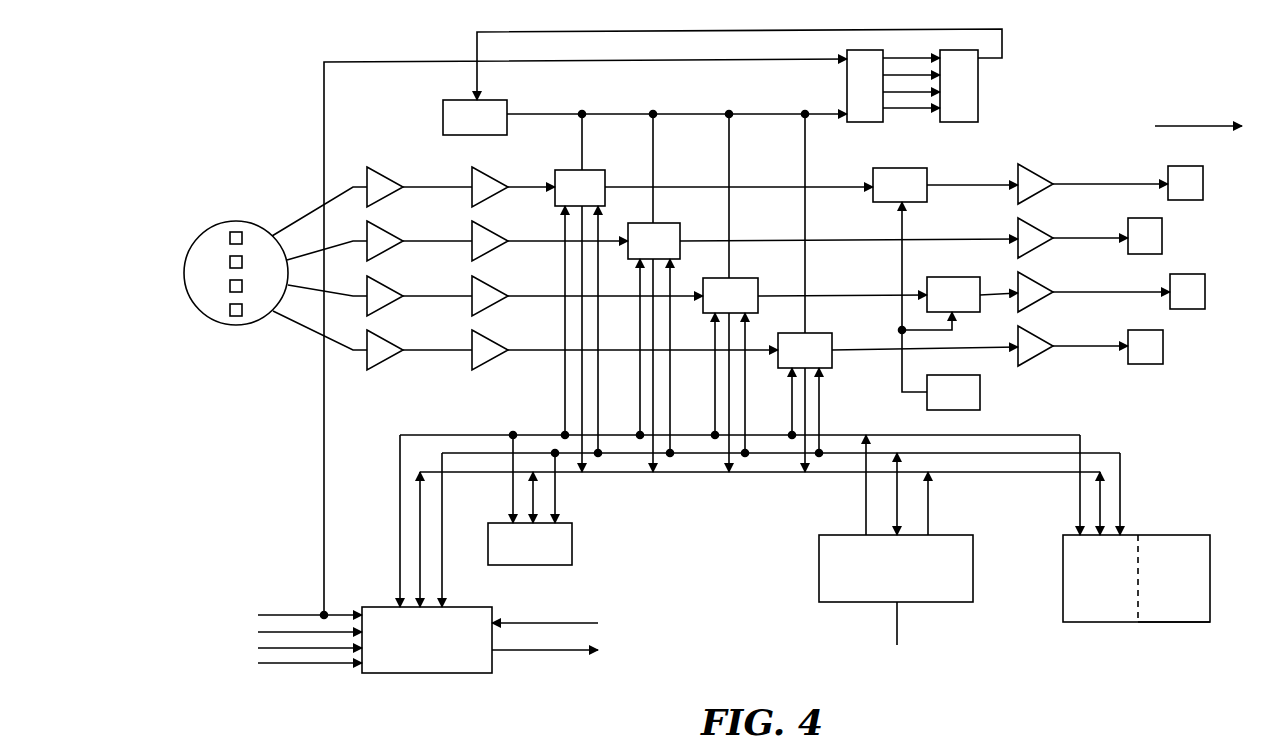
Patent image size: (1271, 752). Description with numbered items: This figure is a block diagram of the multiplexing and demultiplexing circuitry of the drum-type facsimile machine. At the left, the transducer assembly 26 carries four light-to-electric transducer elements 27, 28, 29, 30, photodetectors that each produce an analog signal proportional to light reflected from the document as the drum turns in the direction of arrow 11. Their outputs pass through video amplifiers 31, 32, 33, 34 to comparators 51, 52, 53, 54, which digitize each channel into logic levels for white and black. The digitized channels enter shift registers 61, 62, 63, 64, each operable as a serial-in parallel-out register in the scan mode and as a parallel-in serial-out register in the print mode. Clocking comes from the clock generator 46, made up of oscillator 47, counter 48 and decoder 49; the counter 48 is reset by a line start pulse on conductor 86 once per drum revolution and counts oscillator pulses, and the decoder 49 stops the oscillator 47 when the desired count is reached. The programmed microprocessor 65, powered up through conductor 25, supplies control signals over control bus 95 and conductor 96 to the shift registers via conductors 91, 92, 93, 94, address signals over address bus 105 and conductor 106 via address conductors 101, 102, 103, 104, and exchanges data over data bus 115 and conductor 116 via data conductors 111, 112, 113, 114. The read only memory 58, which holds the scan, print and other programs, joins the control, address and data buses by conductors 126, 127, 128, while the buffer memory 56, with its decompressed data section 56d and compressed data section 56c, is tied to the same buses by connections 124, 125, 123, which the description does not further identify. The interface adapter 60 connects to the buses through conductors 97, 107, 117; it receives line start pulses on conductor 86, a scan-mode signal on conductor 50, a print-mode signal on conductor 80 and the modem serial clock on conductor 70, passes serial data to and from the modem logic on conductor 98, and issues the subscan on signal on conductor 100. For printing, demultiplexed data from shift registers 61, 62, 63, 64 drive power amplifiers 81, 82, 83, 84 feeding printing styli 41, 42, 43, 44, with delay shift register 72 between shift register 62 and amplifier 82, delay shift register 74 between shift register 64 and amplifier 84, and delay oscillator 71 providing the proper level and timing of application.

The arrow 11 is at (1200, 125).
The conductor 25 is at (897, 645).
The transducer assembly 26 is at (257, 226).
The transducer element 27 is at (232, 316).
The transducer element 28 is at (230, 287).
The transducer element 29 is at (230, 258).
The transducer element 30 is at (234, 232).
The video amplifier 31 is at (383, 366).
The video amplifier 32 is at (395, 311).
The video amplifier 33 is at (398, 237).
The video amplifier 34 is at (395, 178).
The printing stylus 41 is at (1163, 358).
The printing stylus 42 is at (1205, 296).
The printing stylus 43 is at (1162, 242).
The printing stylus 44 is at (1203, 184).
The clock generator 46 is at (462, 50).
The oscillator 47 is at (509, 101).
The counter 48 is at (847, 80).
The decoder 49 is at (978, 117).
The conductor 50 is at (262, 633).
The comparator 51 is at (498, 366).
The comparator 52 is at (505, 311).
The comparator 53 is at (502, 234).
The comparator 54 is at (500, 176).
The buffer memory 56 is at (1178, 533).
The compressed data section 56c is at (1178, 622).
The decompressed data section 56d is at (1098, 622).
The read only memory 58 is at (572, 548).
The interface adapter 60 is at (478, 673).
The shift register 61 is at (828, 333).
The shift register 62 is at (750, 278).
The shift register 63 is at (675, 223).
The shift register 64 is at (598, 170).
The programmed microprocessor 65 is at (838, 603).
The conductor 70 is at (270, 665).
The delay oscillator 71 is at (980, 398).
The delay shift register 72 is at (940, 277).
The delay shift register 74 is at (900, 168).
The conductor 80 is at (262, 650).
The power amplifier 81 is at (1040, 342).
The power amplifier 82 is at (1045, 287).
The power amplifier 83 is at (1045, 232).
The power amplifier 84 is at (1045, 178).
The conductor 86 is at (270, 613).
The conductor 91 is at (792, 388).
The conductor 92 is at (715, 368).
The conductor 93 is at (640, 368).
The conductor 94 is at (565, 387).
The control bus 95 is at (418, 435).
The conductor 96 is at (866, 503).
The conductor 97 is at (400, 512).
The conductor 98 is at (572, 623).
The conductor 100 is at (558, 652).
The address conductor 101 is at (819, 418).
The address conductor 102 is at (748, 334).
The address conductor 103 is at (672, 283).
The address conductor 104 is at (600, 230).
The address bus 105 is at (445, 453).
The conductor 106 is at (928, 515).
The conductor 107 is at (442, 540).
The data conductor 111 is at (805, 418).
The data conductor 112 is at (729, 408).
The data conductor 113 is at (653, 408).
The data conductor 114 is at (582, 415).
The data bus 115 is at (480, 472).
The conductor 116 is at (897, 506).
The conductor 117 is at (420, 540).
The clock line 123 is at (1103, 496).
The control line 124 is at (1083, 440).
The data line 125 is at (1123, 456).
The conductor 126 is at (513, 495).
The conductor 127 is at (533, 488).
The conductor 128 is at (555, 509).